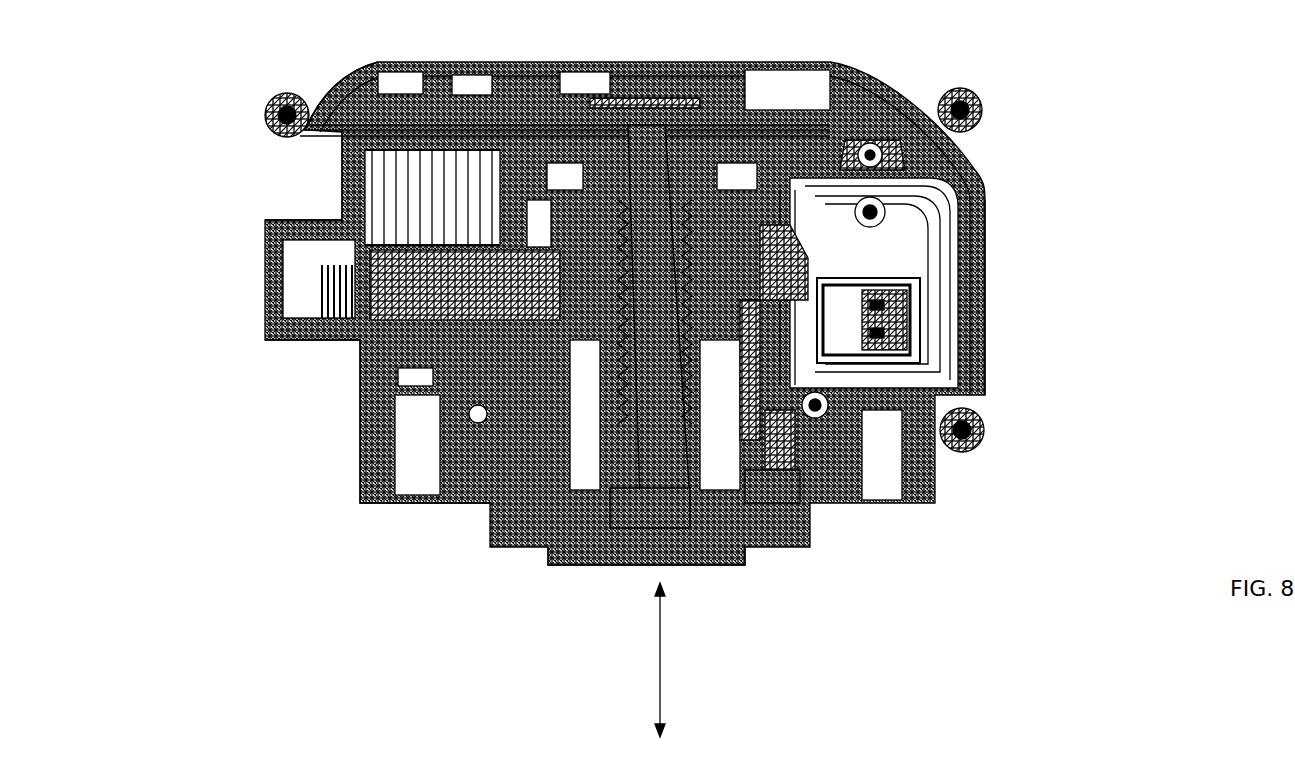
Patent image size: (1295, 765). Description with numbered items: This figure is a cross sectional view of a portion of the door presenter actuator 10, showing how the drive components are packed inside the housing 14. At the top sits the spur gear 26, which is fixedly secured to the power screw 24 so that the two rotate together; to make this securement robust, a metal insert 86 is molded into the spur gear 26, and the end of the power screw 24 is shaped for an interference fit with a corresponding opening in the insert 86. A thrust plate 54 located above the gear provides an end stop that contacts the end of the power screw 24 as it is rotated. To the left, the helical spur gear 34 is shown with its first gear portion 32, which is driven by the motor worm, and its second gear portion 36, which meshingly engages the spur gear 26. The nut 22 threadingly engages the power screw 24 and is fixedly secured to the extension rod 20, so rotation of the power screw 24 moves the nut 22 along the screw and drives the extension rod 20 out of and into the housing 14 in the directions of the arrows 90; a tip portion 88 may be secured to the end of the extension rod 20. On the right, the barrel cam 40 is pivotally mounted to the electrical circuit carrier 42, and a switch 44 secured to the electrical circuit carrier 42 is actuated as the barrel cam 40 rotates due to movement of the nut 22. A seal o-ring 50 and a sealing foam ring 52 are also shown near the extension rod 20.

The door presenter actuator 10 is at (1012, 168).
The housing 14 is at (933, 398).
The extension rod 20 is at (432, 440).
The nut 22 is at (812, 410).
The power screw 24 is at (500, 368).
The spur gear 26 is at (840, 120).
The first gear portion 32 is at (310, 340).
The helical spur gear 34 is at (325, 292).
The second gear portion 36 is at (415, 170).
The barrel cam 40 is at (830, 222).
The electrical circuit carrier 42 is at (918, 305).
The switch 44 is at (803, 250).
The seal o-ring 50 is at (898, 452).
The sealing foam ring 52 is at (796, 445).
The thrust plate 54 is at (640, 80).
The metal insert 86 is at (578, 135).
The tip portion 88 is at (625, 558).
The arrows 90 is at (662, 652).